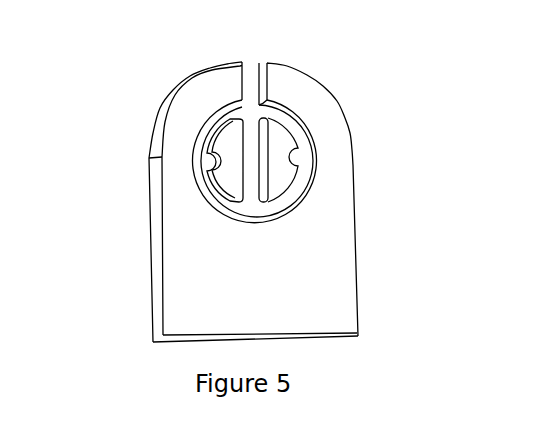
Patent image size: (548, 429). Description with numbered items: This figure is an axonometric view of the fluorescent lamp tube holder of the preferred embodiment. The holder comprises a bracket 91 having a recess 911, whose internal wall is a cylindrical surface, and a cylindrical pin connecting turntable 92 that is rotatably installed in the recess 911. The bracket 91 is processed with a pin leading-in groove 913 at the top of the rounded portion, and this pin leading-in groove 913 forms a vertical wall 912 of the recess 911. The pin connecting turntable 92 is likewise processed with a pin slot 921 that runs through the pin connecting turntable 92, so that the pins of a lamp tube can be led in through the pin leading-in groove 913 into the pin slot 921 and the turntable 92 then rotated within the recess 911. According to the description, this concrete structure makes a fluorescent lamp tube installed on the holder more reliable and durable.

The bracket 91 is at (318, 252).
The recess 911 is at (253, 212).
The vertical wall 912 is at (230, 87).
The pin leading-in groove 913 is at (252, 78).
The pin connecting turntable 92 is at (229, 155).
The pin slot 921 is at (253, 162).